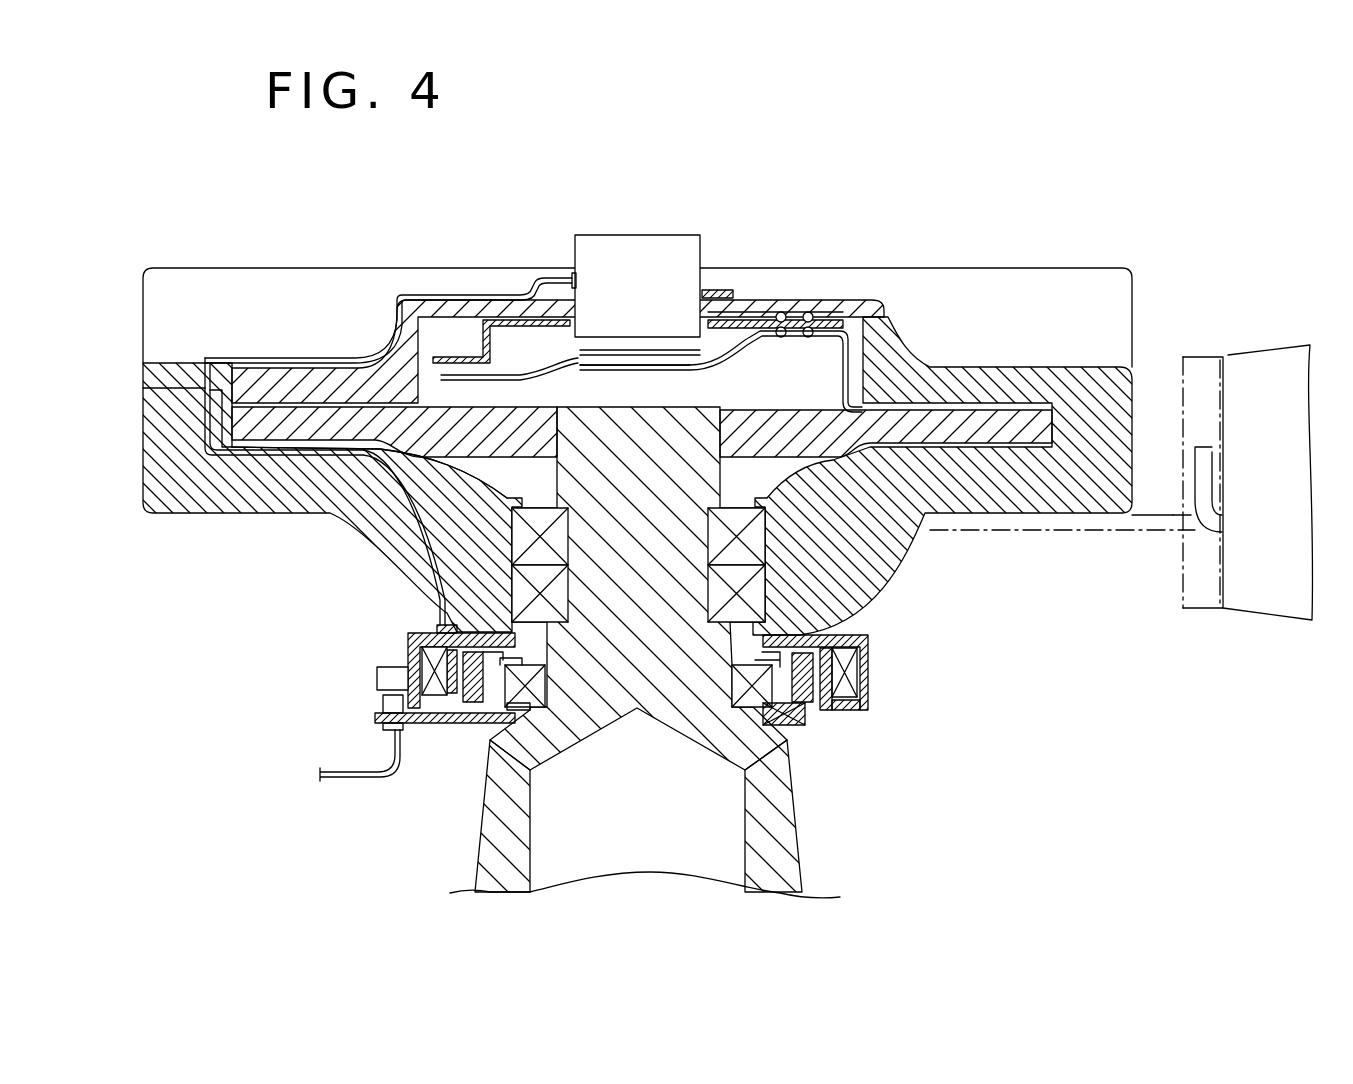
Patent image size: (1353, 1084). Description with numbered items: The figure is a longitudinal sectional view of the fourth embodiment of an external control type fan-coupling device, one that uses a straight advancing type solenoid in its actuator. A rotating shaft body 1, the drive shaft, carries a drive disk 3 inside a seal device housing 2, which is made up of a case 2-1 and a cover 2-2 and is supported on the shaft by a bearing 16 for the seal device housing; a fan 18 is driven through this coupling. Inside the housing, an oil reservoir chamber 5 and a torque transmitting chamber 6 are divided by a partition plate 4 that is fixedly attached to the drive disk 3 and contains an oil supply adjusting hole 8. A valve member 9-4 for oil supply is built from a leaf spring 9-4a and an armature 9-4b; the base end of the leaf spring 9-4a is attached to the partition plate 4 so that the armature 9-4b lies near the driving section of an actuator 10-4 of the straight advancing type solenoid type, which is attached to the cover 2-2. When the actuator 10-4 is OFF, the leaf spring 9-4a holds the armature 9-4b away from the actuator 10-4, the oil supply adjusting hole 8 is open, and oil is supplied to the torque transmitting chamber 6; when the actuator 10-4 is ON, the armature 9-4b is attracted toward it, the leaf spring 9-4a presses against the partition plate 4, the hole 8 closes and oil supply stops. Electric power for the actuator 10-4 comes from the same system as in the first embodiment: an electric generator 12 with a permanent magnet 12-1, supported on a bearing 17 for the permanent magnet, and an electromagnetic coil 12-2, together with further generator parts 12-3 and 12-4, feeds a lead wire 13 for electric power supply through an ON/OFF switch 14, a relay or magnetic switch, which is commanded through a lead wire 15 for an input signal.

The rotating shaft body 1 is at (790, 860).
The seal device housing 2 is at (1052, 246).
The case 2-1 is at (240, 507).
The cover 2-2 is at (143, 367).
The drive disk 3 is at (948, 425).
The partition plate 4 is at (850, 357).
The oil reservoir chamber 5 is at (430, 330).
The torque transmitting chamber 6 is at (483, 481).
The oil supply adjusting hole 8 is at (462, 350).
The valve member for oil supply 9-4 is at (545, 356).
The leaf spring 9-4a is at (733, 353).
The armature 9-4b is at (607, 350).
The actuator of the straight advancing type solenoid type 10-4 is at (670, 260).
The electric generator 12 is at (396, 650).
The permanent magnet 12-1 is at (810, 703).
The electromagnetic coil 12-2 is at (850, 683).
The sensor rotor element 12-3 is at (800, 743).
The sensor frame 12-4 is at (860, 667).
The lead wire for electric power supply 13 is at (285, 365).
The ON/OFF switch 14 is at (387, 678).
The lead wire for an input signal 15 is at (355, 779).
The bearing for the seal device housing 16 is at (752, 533).
The bearing for the permanent magnet 17 is at (568, 690).
The fan 18 is at (1260, 593).